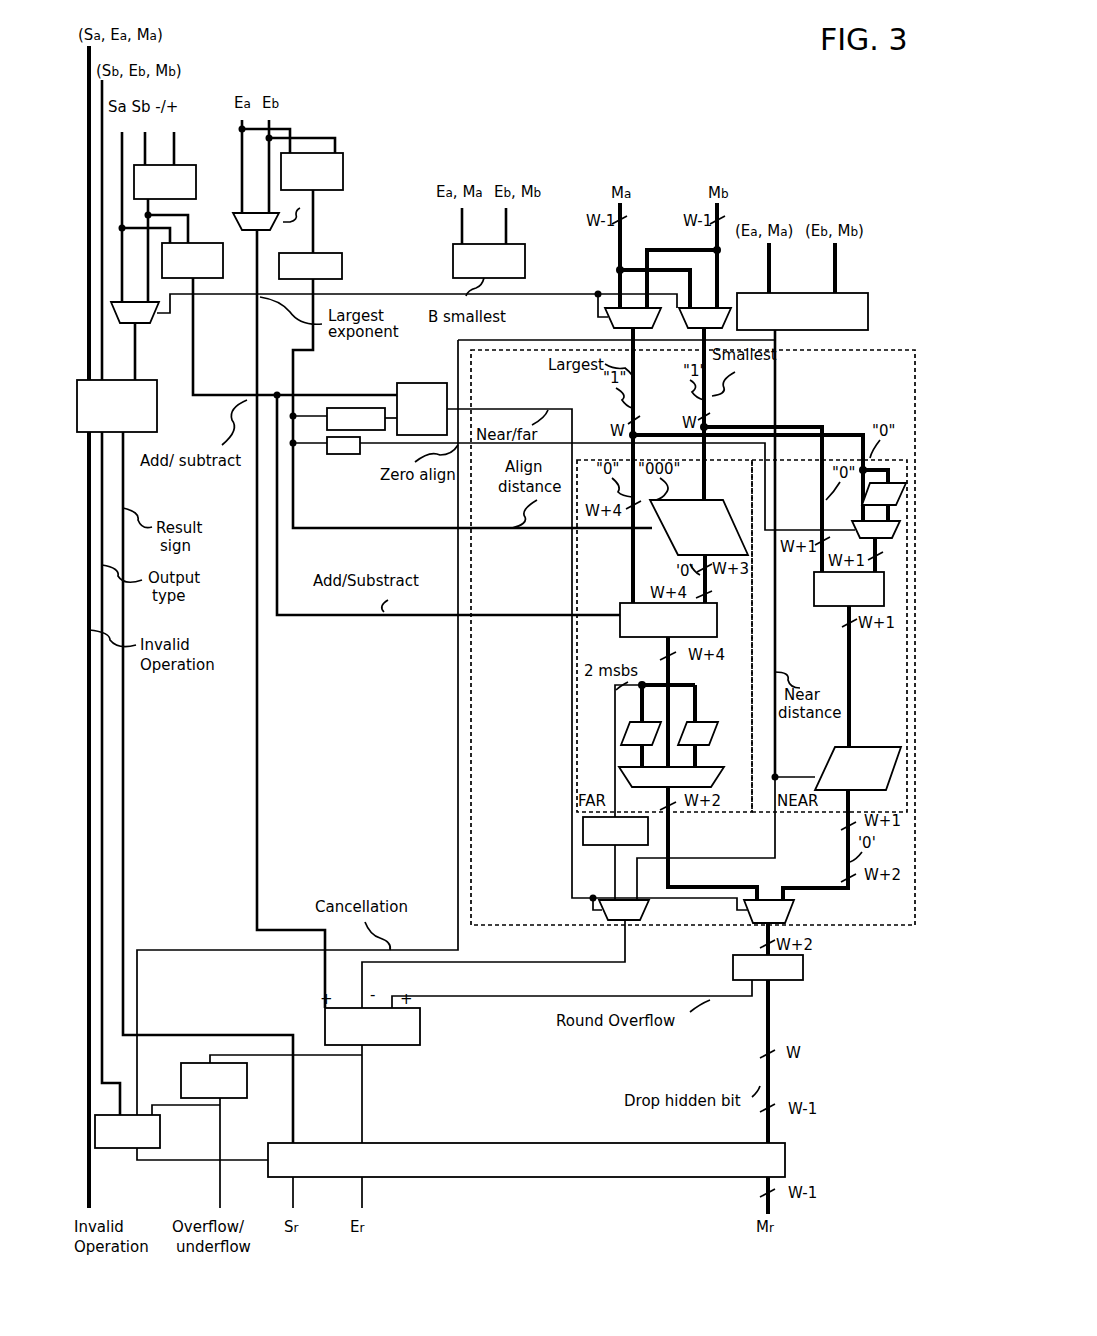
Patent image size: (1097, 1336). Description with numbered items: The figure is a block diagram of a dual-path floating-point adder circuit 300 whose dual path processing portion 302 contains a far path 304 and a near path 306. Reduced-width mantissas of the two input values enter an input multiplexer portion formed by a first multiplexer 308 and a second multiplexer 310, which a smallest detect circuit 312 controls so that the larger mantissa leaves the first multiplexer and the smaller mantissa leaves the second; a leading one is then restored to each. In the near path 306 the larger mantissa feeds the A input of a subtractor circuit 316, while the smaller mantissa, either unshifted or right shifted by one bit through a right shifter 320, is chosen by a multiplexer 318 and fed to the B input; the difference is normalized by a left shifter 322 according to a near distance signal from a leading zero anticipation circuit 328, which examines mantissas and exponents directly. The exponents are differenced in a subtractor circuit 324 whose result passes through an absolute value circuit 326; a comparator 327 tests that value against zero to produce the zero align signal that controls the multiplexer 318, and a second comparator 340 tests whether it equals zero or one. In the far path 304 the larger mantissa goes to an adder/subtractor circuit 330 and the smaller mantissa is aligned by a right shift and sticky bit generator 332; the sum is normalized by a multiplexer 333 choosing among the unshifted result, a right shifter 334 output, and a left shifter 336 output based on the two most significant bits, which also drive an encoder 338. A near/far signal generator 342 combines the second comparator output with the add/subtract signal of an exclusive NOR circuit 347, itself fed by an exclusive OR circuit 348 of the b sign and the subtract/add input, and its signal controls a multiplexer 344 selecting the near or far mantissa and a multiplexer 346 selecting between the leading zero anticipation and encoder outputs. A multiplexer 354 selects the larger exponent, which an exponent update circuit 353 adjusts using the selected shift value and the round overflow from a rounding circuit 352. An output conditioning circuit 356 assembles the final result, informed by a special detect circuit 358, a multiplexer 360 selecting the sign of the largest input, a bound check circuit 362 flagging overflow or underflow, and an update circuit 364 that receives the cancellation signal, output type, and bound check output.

The dual-path floating-point adder circuit 300 is at (900, 1236).
The dual path processing portion 302 is at (468, 745).
The far path 304 is at (576, 688).
The near path 306 is at (822, 814).
The first multiplexer 308 is at (606, 322).
The second multiplexer 310 is at (700, 336).
The smallest detect circuit 312 is at (522, 246).
The subtractor circuit 316 is at (830, 606).
The multiplexer 318 is at (898, 530).
The right shifter 320 is at (818, 506).
The left shifter 322 is at (892, 747).
The subtractor circuit 324 is at (340, 190).
The absolute value circuit 326 is at (316, 256).
The comparator 327 is at (350, 454).
The leading zero anticipation circuit 328 is at (852, 293).
The adder/subtractor circuit 330 is at (622, 604).
The right shift and sticky bit generator 332 is at (724, 500).
The multiplexer 333 is at (716, 770).
The right shifter 334 is at (714, 728).
The left shifter 336 is at (630, 736).
The encoder 338 is at (604, 845).
The second comparator 340 is at (358, 395).
The near/far signal generator 342 is at (412, 384).
The multiplexer 344 is at (792, 912).
The multiplexer 346 is at (636, 922).
The exclusive NOR circuit 347 is at (205, 243).
The exclusive OR circuit 348 is at (194, 168).
The rounding circuit 352 is at (803, 968).
The exponent update circuit 353 is at (420, 1038).
The multiplexer 354 is at (236, 215).
The output conditioning circuit 356 is at (785, 1160).
The special detect circuit 358 is at (157, 398).
The multiplexer 360 is at (140, 323).
The bound check circuit 362 is at (236, 1098).
The update circuit 364 is at (106, 1148).